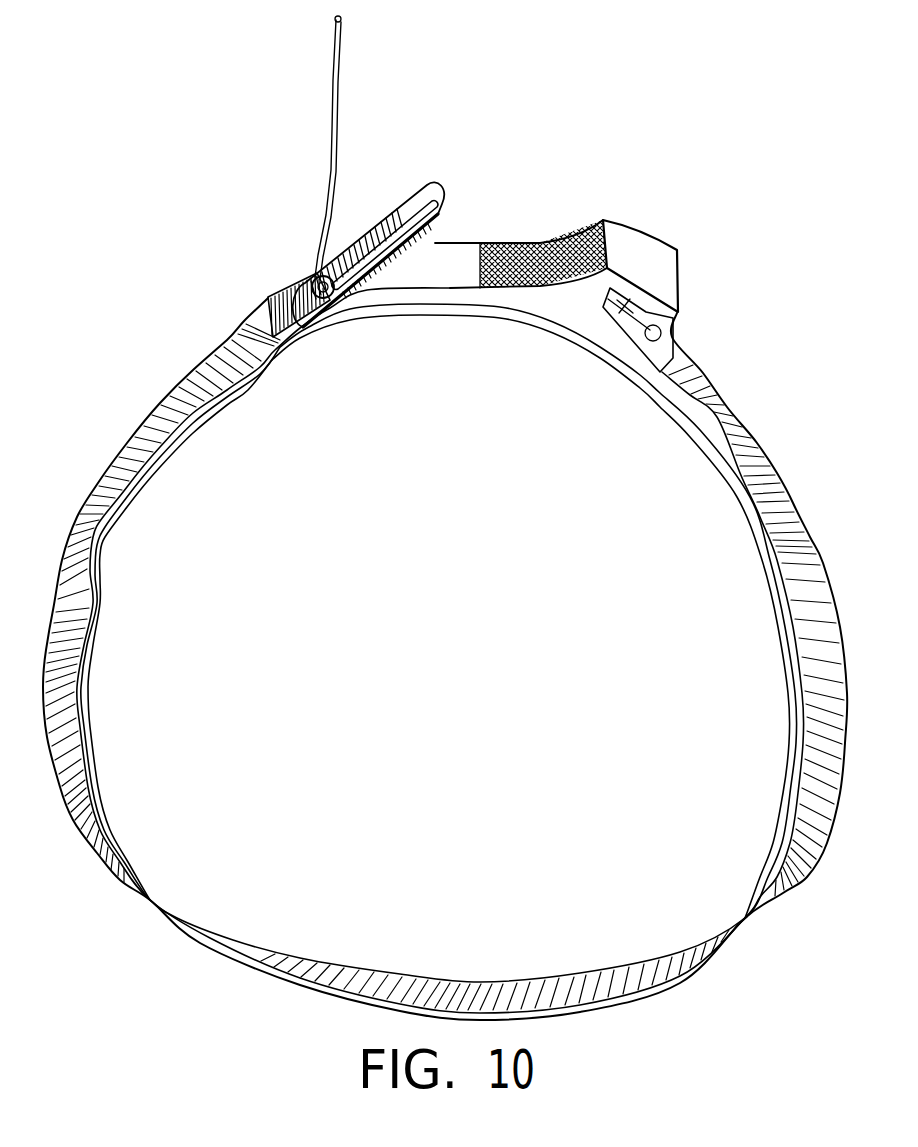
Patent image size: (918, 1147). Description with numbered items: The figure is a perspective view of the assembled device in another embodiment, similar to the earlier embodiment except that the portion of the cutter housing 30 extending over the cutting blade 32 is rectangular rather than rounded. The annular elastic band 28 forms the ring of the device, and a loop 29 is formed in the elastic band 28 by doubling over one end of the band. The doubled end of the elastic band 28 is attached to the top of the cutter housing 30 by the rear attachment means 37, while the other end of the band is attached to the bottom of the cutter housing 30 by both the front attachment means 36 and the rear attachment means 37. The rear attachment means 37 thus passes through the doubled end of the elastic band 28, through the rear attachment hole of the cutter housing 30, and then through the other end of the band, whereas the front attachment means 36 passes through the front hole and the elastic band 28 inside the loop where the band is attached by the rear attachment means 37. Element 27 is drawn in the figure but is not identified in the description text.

The cord 27 is at (327, 117).
The annular elastic band 28 is at (193, 370).
The loop 29 is at (413, 182).
The cutter housing 30 is at (503, 233).
The cutting blade 32 is at (560, 335).
The front attachment means 36 is at (673, 317).
The rear attachment means 37 is at (312, 282).